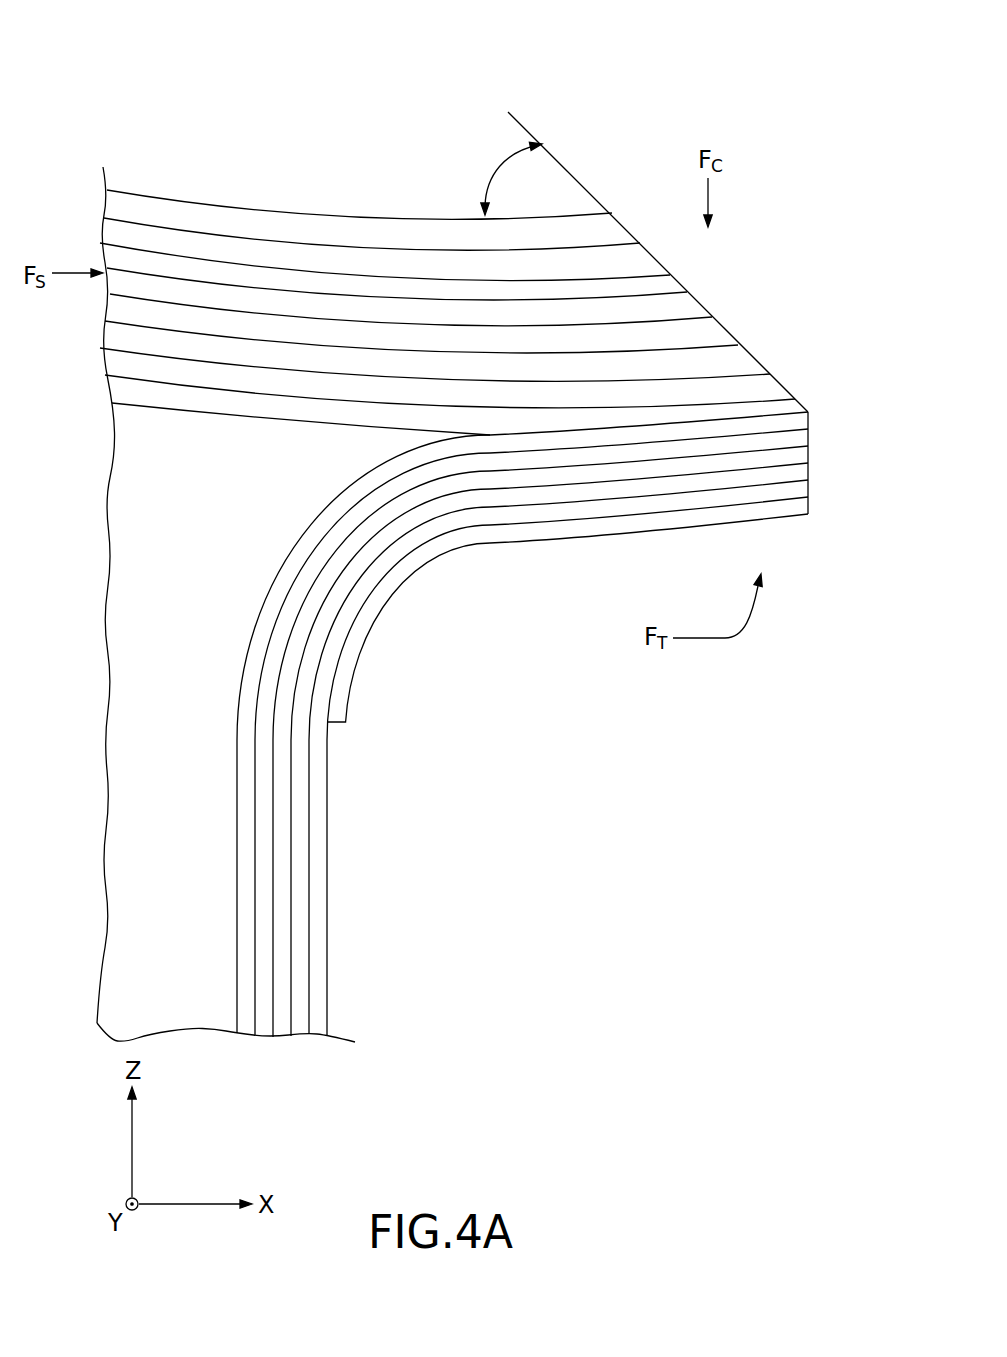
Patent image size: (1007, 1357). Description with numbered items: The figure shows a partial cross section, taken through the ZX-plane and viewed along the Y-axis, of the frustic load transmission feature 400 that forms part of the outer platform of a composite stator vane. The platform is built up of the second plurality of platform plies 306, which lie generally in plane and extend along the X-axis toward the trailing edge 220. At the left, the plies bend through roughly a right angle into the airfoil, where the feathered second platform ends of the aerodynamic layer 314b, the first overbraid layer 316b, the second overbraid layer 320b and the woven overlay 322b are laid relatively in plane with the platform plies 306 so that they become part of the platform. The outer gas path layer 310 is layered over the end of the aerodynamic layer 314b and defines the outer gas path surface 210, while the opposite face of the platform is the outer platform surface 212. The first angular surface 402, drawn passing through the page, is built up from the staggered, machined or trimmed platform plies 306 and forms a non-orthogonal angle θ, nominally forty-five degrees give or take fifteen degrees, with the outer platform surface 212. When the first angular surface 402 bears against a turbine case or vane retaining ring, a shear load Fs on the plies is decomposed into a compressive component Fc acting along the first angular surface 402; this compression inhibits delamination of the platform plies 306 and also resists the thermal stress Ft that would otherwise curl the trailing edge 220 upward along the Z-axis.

The frustic load transmission feature 400 is at (595, 110).
The first angular surface 402 is at (684, 282).
The outer platform surface 212 is at (311, 212).
The second plurality of platform plies 306 is at (713, 328).
The trailing edge 220 is at (828, 452).
The outer gas path surface 210 is at (695, 525).
The outer gas path layer 310 is at (795, 512).
The second platform end of aerodynamic layer 314b is at (437, 523).
The second platform end of first overbraid layer 316b is at (565, 477).
The second platform end of second overbraid layer 320b is at (623, 457).
The second platform end of woven overlay 322b is at (507, 495).